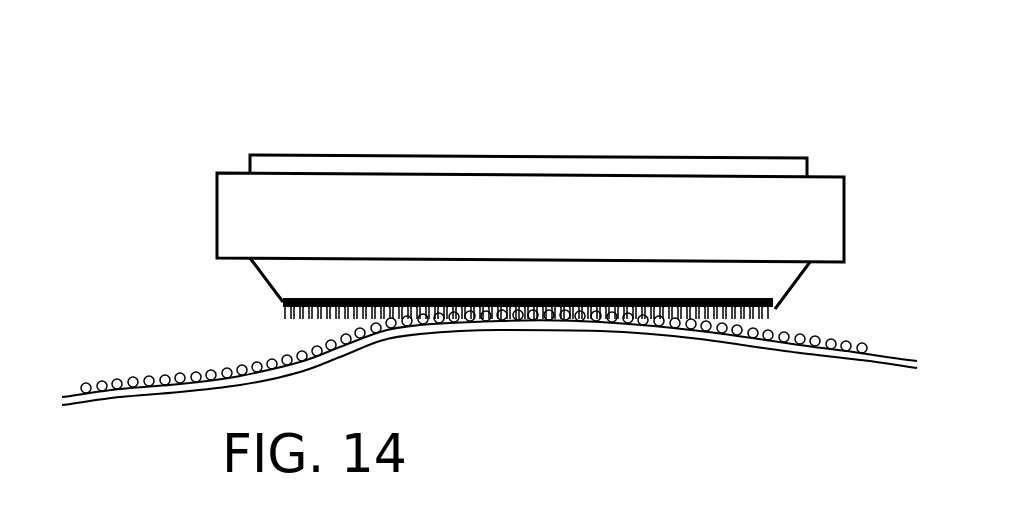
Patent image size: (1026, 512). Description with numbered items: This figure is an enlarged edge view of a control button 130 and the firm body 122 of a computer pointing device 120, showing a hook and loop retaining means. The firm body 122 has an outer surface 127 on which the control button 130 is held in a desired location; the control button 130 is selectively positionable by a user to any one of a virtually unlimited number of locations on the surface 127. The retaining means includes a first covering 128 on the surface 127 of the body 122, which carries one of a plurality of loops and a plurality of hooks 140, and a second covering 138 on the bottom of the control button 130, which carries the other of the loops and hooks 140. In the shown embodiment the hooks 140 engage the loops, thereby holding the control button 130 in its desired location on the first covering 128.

The computer pointing device 120 is at (745, 122).
The control button 130 is at (346, 155).
The second covering 138 is at (283, 302).
The hooks 140 is at (285, 318).
The firm body 122 is at (489, 361).
The outer surface 127 is at (860, 357).
The first covering 128 is at (897, 348).